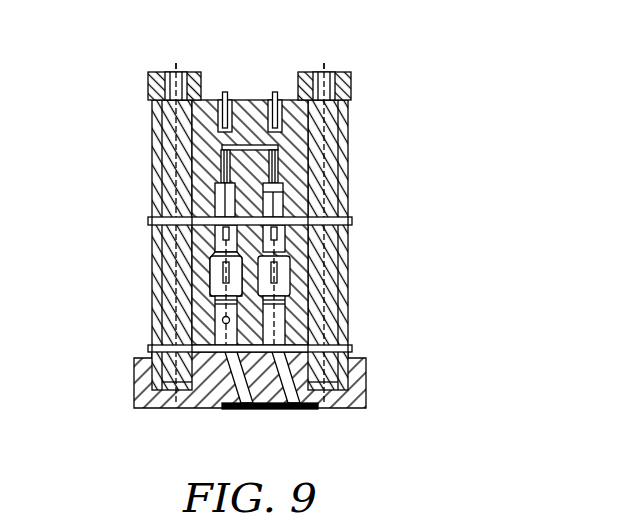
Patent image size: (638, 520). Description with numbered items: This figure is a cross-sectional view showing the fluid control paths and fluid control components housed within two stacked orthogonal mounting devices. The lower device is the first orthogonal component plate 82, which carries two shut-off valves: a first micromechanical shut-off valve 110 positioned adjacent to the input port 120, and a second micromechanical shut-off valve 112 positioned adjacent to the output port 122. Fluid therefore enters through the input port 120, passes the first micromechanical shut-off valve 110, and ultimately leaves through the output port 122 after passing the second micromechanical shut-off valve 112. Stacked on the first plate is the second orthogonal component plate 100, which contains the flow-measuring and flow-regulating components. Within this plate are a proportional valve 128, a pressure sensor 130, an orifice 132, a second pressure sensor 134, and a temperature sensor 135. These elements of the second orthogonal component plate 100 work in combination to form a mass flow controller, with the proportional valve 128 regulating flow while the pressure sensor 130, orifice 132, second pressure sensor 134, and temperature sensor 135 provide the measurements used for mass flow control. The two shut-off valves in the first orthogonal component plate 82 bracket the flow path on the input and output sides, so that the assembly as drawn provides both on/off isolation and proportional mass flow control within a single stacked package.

The first orthogonal component plate 82 is at (369, 232).
The second orthogonal component plate 100 is at (130, 232).
The first micromechanical shut-off valve 110 is at (155, 285).
The second micromechanical shut-off valve 112 is at (342, 285).
The input port 120 is at (255, 433).
The output port 122 is at (301, 411).
The proportional valve 128 is at (280, 75).
The pressure sensor 130 is at (358, 134).
The orifice 132 is at (360, 150).
The second pressure sensor 134 is at (355, 208).
The temperature sensor 135 is at (355, 183).